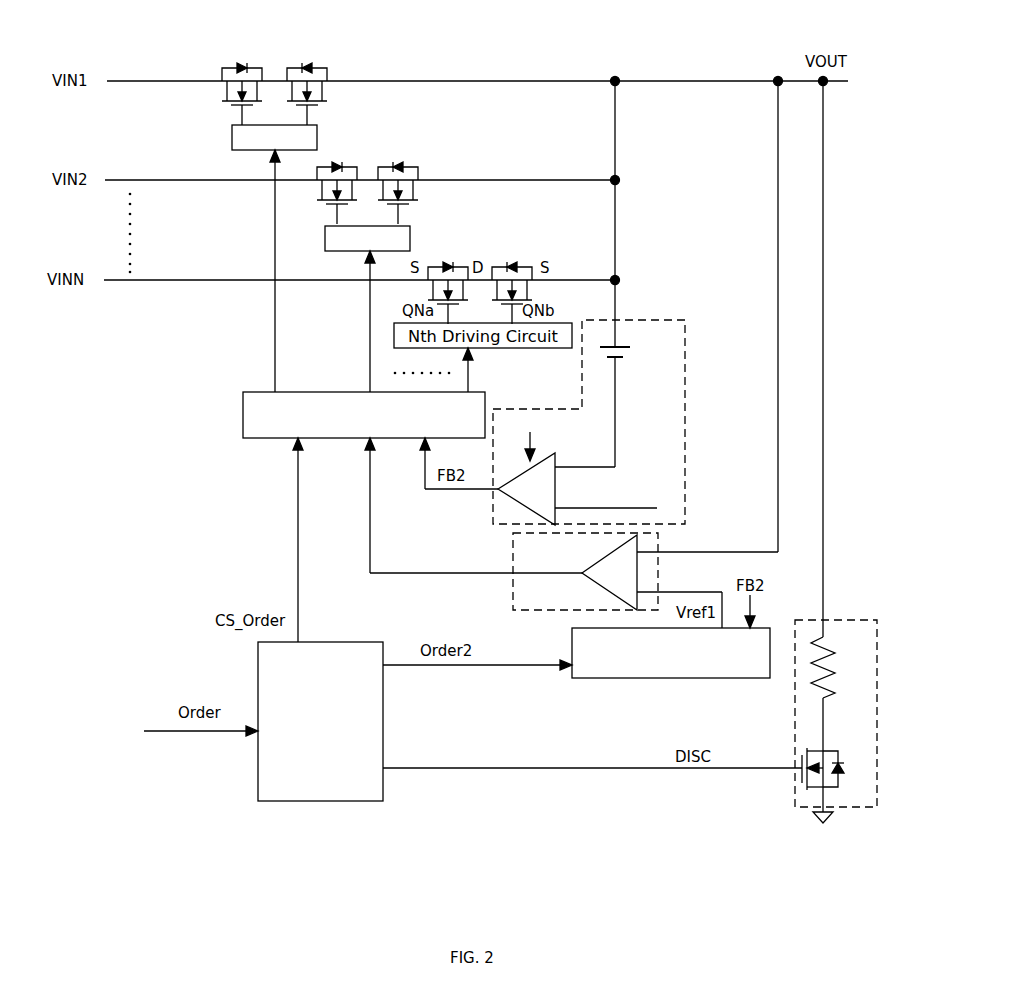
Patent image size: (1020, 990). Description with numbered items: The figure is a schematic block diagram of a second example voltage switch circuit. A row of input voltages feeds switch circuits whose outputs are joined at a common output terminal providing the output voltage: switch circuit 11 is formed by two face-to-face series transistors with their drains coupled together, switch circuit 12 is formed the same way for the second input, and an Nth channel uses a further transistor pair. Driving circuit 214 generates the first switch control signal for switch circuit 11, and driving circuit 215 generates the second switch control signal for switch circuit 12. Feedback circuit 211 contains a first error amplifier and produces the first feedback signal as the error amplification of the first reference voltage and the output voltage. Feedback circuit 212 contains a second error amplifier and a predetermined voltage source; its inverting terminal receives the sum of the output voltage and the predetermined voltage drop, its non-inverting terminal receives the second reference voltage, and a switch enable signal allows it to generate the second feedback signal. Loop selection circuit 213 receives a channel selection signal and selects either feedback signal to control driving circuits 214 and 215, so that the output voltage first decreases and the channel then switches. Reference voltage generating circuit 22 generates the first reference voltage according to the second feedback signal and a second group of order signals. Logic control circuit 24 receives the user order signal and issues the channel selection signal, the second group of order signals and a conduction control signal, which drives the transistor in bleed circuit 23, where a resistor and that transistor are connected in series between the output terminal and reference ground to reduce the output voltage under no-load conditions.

The switch circuit 11 is at (287, 56).
The switch circuit 12 is at (374, 157).
The driving circuit 214 is at (274, 137).
The driving circuit 215 is at (367, 238).
The loop selection circuit 213 is at (364, 415).
The feedback circuit 212 is at (690, 394).
The feedback circuit 211 is at (520, 584).
The reference voltage generating circuit 22 is at (671, 653).
The logic control circuit 24 is at (320, 721).
The bleed circuit 23 is at (829, 620).